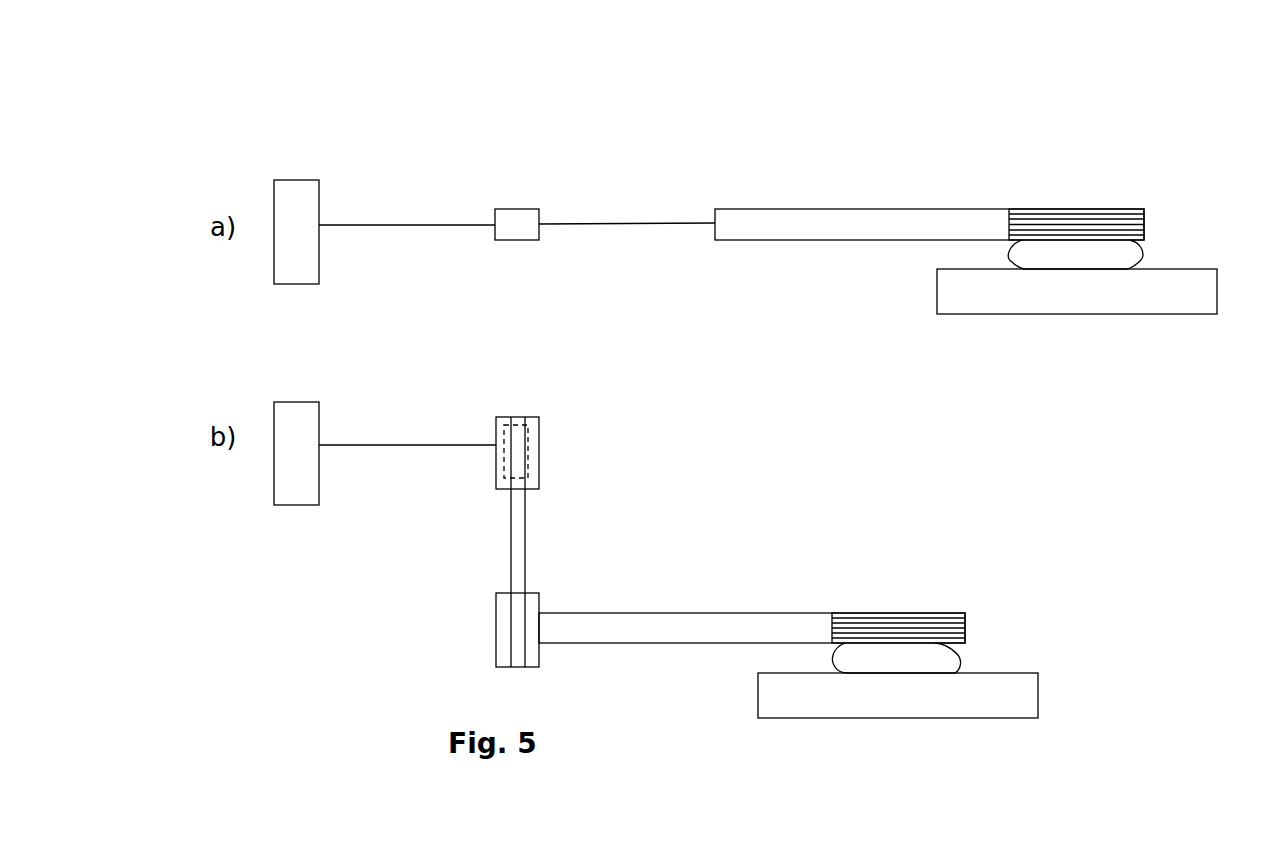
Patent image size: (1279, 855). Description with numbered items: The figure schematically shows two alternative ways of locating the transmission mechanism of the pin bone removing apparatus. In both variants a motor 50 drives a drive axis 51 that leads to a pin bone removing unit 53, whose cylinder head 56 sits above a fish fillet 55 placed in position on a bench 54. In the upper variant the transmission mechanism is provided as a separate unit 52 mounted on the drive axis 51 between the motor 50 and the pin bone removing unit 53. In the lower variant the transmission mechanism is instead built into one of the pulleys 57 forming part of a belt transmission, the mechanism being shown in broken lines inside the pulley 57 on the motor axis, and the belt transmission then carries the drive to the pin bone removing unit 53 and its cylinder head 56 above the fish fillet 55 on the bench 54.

The motor 50 is at (288, 188).
The drive axis 51 is at (382, 225).
The separate unit 52 is at (523, 219).
The pin bone removing unit 53 is at (903, 166).
The bench 54 is at (980, 303).
The fish fillet 55 is at (1113, 258).
The cylinder head 56 is at (1053, 209).
The pulley 57 is at (531, 417).